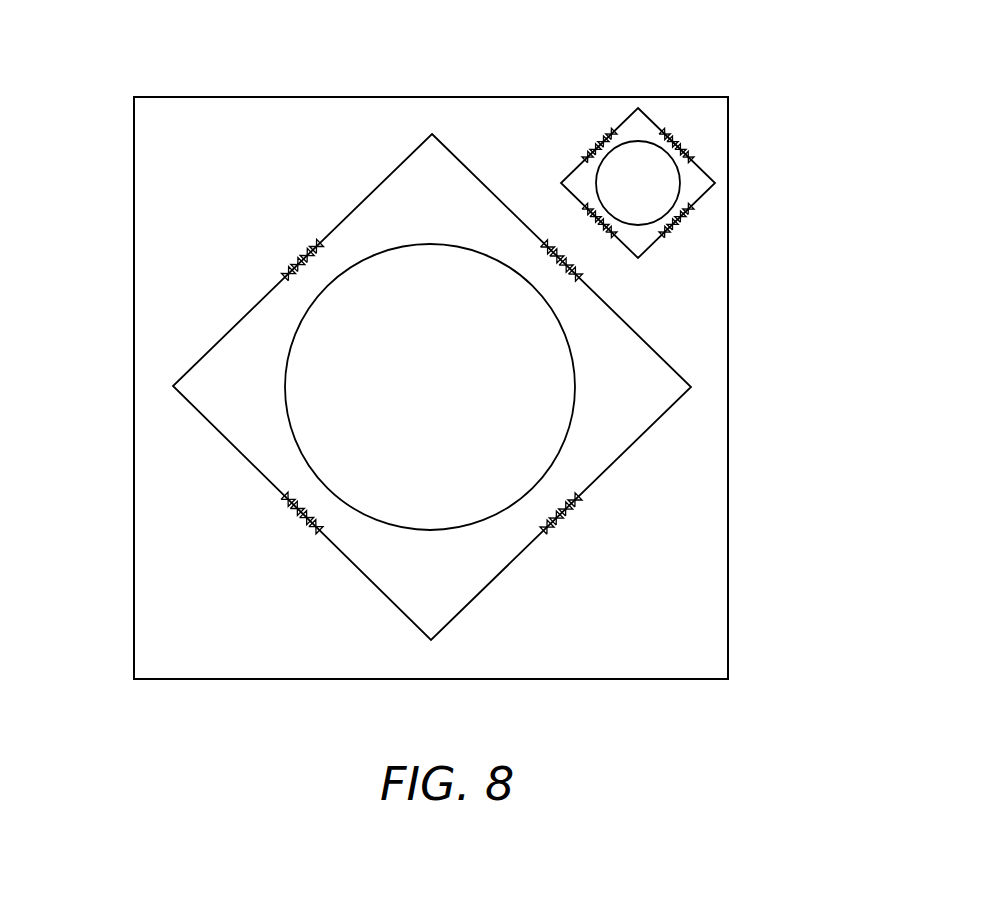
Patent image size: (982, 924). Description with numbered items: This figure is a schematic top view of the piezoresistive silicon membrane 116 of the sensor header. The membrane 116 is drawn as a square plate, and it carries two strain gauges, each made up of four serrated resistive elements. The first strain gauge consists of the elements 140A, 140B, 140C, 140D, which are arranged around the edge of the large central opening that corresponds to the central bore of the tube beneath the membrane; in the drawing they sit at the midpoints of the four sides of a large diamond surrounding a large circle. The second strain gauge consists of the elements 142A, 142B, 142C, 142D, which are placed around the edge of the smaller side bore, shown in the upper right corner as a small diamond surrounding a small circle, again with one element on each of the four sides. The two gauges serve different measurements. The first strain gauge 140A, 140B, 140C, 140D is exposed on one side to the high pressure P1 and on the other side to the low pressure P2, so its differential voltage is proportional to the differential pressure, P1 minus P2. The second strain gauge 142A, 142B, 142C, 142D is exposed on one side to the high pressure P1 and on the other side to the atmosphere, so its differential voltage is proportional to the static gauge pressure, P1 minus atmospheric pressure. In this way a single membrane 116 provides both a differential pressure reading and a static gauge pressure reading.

The piezoresistive silicon membrane 116 is at (188, 198).
The first strain gauge element 140A is at (293, 262).
The first strain gauge element 140B is at (548, 240).
The first strain gauge element 140C is at (576, 503).
The first strain gauge element 140D is at (290, 508).
The second strain gauge element 142A is at (607, 138).
The second strain gauge element 142B is at (678, 145).
The second strain gauge element 142C is at (693, 207).
The second strain gauge element 142D is at (618, 240).